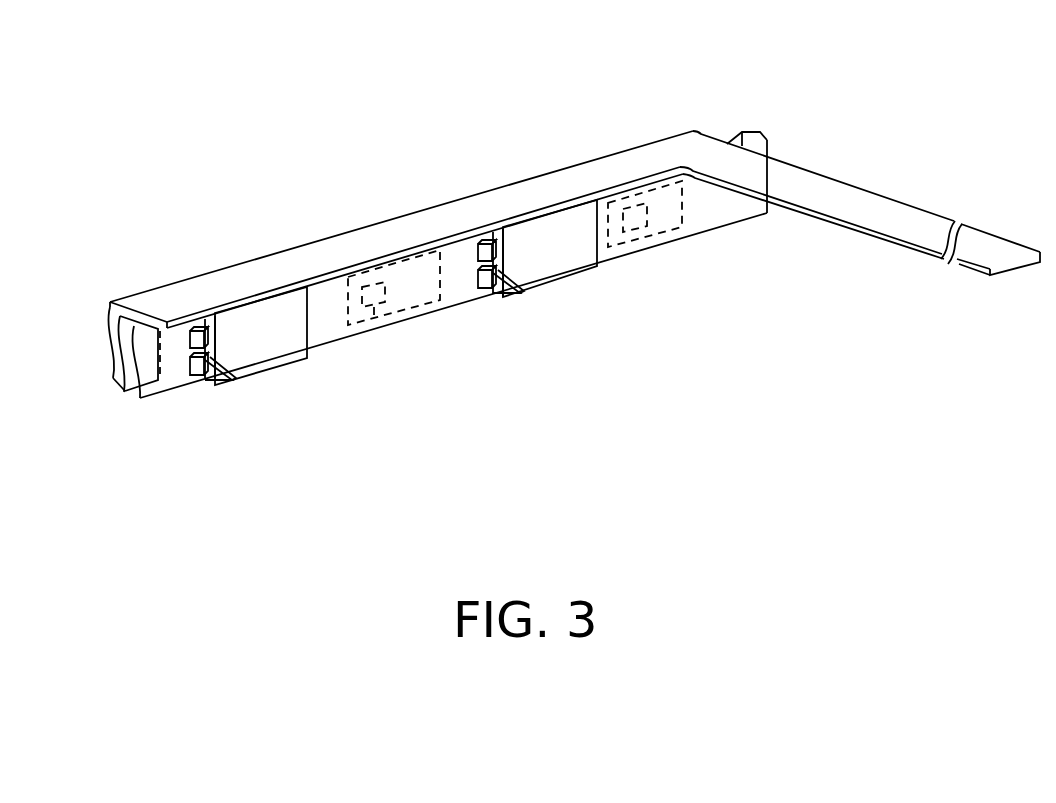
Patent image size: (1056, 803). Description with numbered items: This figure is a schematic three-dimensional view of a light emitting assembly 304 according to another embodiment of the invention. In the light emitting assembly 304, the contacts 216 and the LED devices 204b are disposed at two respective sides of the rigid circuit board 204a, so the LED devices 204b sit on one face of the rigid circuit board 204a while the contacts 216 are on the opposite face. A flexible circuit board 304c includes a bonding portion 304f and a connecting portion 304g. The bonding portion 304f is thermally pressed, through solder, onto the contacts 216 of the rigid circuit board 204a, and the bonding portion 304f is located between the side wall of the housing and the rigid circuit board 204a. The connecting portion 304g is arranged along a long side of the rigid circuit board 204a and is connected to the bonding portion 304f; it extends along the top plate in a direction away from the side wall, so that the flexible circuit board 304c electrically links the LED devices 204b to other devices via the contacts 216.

The light emitting assembly 304 is at (805, 438).
The flexible circuit board 304c is at (654, 58).
The bonding portion 304f is at (397, 290).
The connecting portion 304g is at (700, 155).
The rigid circuit board 204a is at (660, 222).
The LED devices 204b is at (278, 348).
The contacts 216 is at (373, 327).